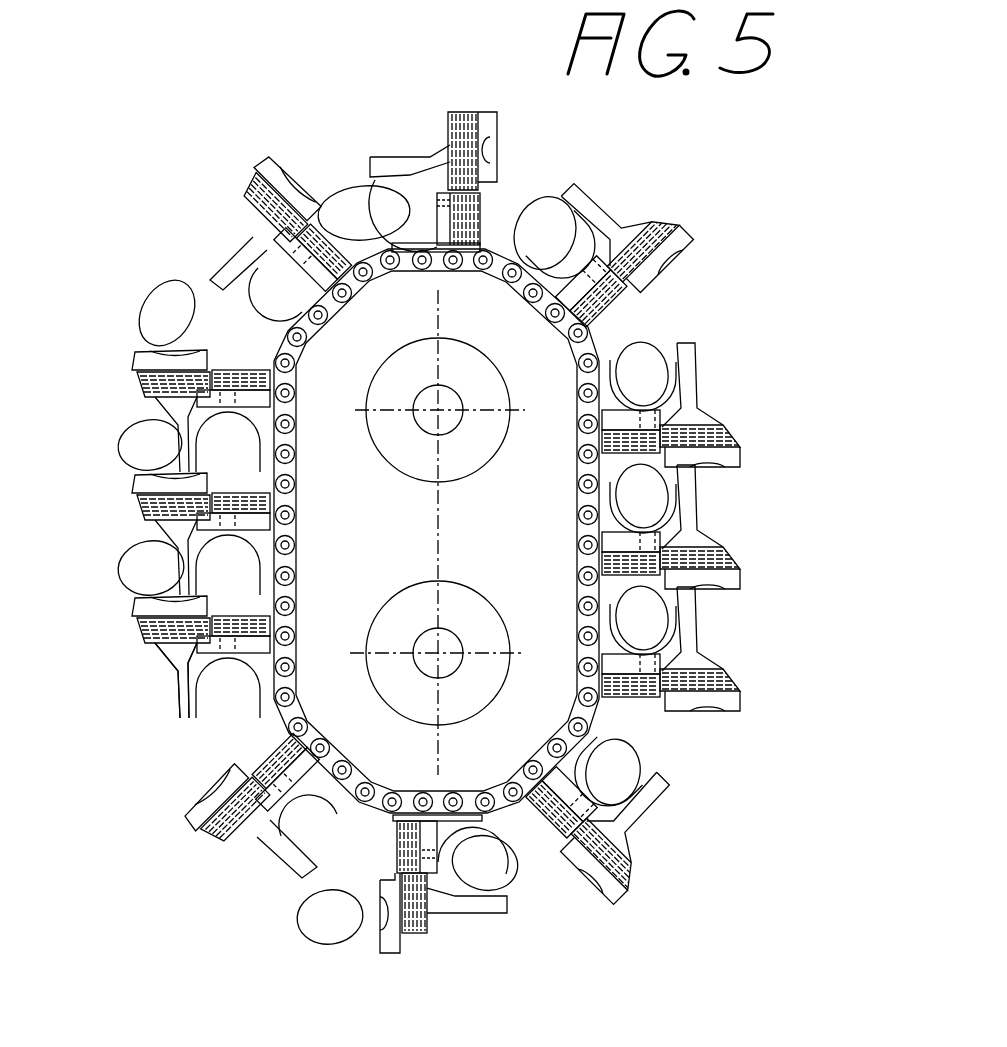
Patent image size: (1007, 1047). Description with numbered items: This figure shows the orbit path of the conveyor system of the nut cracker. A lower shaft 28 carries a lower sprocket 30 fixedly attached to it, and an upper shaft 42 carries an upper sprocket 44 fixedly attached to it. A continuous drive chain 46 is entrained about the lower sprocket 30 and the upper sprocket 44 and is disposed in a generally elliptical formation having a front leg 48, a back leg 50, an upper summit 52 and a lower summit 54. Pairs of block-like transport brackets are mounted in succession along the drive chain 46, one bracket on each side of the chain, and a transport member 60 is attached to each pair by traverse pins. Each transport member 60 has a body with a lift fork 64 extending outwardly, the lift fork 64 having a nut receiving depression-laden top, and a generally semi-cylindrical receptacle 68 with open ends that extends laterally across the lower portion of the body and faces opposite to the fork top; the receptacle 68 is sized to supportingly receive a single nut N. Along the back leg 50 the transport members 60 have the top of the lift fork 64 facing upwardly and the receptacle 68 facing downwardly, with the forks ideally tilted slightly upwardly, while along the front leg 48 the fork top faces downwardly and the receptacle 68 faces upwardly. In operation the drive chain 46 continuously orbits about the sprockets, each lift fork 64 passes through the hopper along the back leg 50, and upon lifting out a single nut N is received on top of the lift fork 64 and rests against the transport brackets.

The lower shaft 28 is at (449, 652).
The lower sprocket 30 is at (491, 676).
The upper shaft 42 is at (449, 414).
The upper sprocket 44 is at (489, 366).
The drive chain 46 is at (523, 811).
The front leg 48 is at (706, 362).
The back leg 50 is at (168, 300).
The upper summit 52 is at (301, 162).
The lower summit 54 is at (531, 925).
The transport member 60 is at (186, 680).
The lift fork 64 is at (140, 622).
The semi-cylindrical receptacle 68 is at (229, 676).
The nut N is at (130, 438).